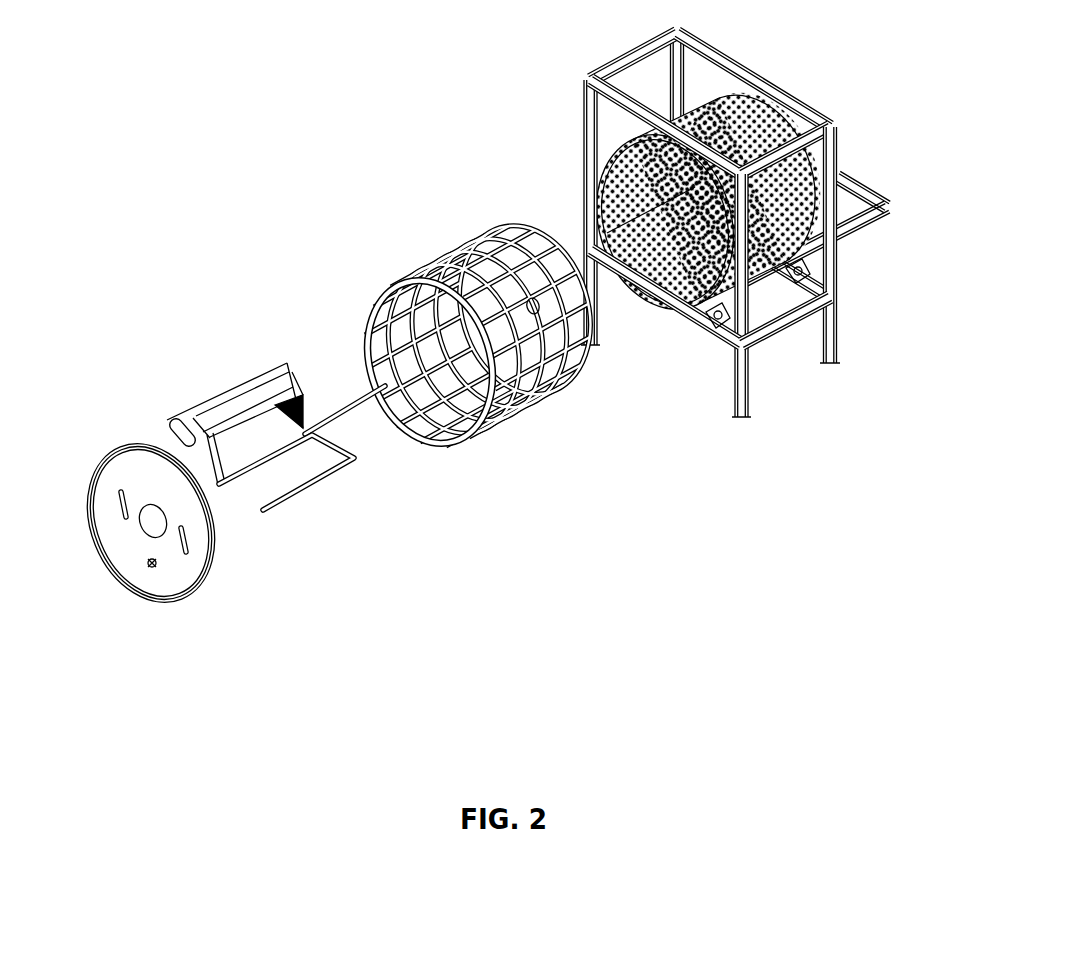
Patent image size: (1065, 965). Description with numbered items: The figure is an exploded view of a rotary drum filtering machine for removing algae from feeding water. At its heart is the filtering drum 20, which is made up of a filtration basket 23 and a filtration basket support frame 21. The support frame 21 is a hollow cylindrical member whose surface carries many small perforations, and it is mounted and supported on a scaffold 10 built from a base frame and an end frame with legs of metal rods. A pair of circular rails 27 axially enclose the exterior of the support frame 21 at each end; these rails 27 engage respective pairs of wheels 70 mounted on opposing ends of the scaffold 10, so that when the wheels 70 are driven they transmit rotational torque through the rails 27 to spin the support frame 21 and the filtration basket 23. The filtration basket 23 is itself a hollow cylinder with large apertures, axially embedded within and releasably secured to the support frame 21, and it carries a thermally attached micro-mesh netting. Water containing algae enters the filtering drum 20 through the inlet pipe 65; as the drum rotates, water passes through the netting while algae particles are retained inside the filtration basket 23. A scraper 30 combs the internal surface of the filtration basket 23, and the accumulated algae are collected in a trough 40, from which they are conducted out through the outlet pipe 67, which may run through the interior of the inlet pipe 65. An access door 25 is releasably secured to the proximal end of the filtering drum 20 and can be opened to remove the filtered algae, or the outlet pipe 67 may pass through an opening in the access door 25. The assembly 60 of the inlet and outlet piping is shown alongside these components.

The scaffold 10 is at (732, 218).
The filtering drum 20 is at (674, 218).
The filtration basket support frame 21 is at (674, 168).
The filtration basket 23 is at (503, 225).
The access door 25 is at (118, 478).
The circular rails 27 is at (762, 100).
The scraper 30 is at (248, 385).
The trough 40 is at (180, 422).
The support assembly 60 is at (332, 446).
The inlet pipe 65 is at (328, 418).
The outlet pipe 67 is at (318, 483).
The wheels 70 is at (800, 282).